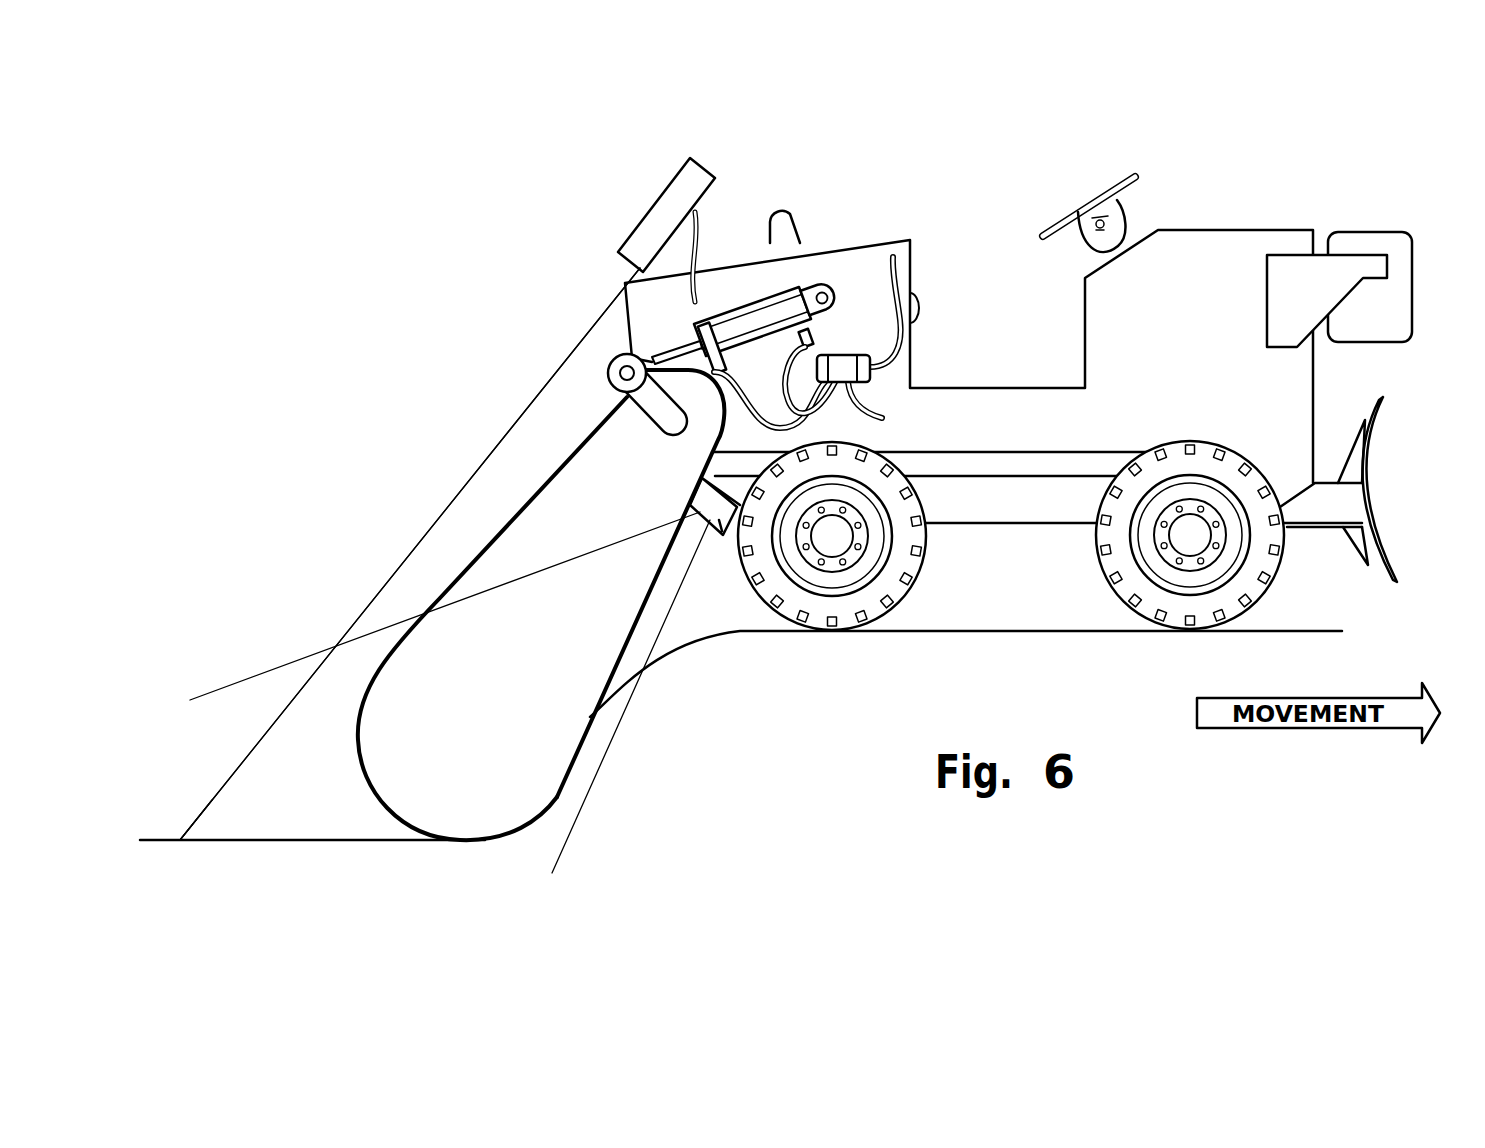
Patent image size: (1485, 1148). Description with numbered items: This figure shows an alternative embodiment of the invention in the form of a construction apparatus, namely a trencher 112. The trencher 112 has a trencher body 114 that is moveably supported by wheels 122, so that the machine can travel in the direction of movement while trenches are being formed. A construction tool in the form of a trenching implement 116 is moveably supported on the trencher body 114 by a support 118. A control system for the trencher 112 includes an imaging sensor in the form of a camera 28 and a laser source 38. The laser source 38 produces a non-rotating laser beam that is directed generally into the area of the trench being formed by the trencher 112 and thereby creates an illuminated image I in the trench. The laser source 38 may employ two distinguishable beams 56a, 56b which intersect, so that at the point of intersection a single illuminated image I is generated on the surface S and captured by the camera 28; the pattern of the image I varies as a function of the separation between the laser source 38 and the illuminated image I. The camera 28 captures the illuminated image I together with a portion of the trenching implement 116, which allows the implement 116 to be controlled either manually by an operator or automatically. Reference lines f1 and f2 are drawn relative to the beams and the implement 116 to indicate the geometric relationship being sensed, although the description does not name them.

The laser source 38 is at (668, 181).
The trencher body 114 is at (1103, 190).
The trencher 112 is at (1313, 231).
The beam 56a is at (498, 428).
The beam 56b is at (410, 554).
The support 118 is at (440, 595).
The first reference line f1 is at (294, 663).
The second reference line f2 is at (610, 746).
The illuminated image I is at (180, 840).
The ground surface S is at (268, 840).
The camera 28 is at (722, 538).
The trenching implement 116 is at (556, 802).
The wheels 122 is at (820, 633).